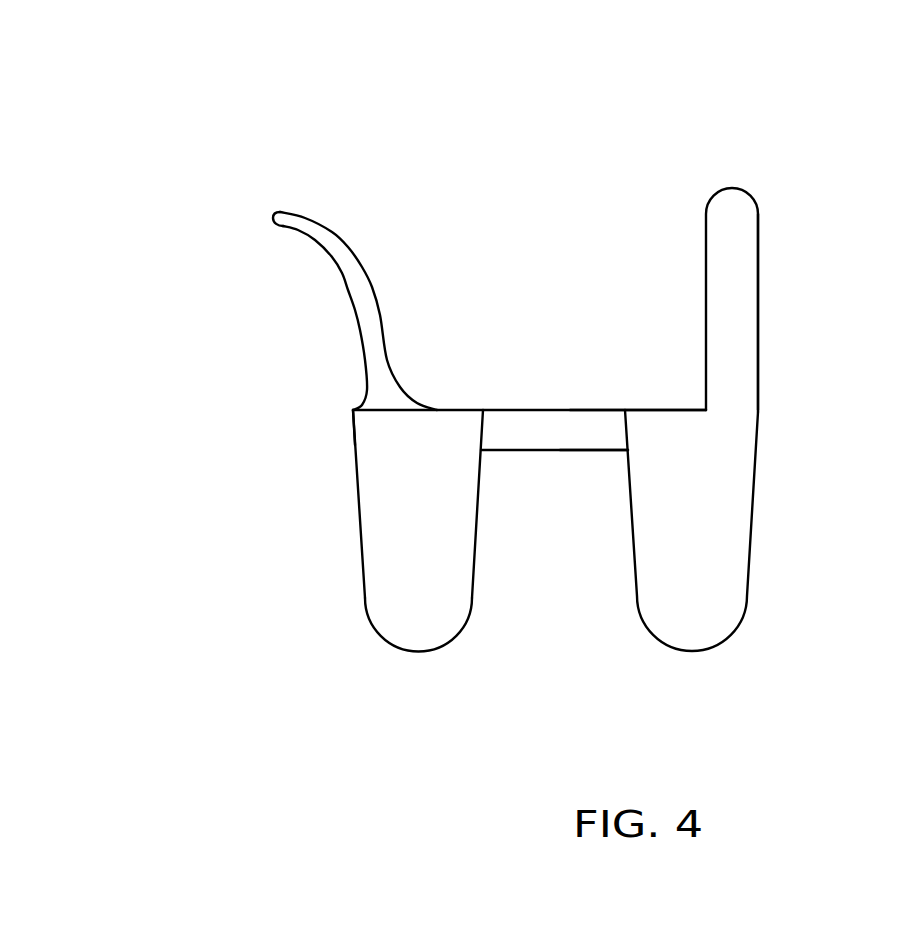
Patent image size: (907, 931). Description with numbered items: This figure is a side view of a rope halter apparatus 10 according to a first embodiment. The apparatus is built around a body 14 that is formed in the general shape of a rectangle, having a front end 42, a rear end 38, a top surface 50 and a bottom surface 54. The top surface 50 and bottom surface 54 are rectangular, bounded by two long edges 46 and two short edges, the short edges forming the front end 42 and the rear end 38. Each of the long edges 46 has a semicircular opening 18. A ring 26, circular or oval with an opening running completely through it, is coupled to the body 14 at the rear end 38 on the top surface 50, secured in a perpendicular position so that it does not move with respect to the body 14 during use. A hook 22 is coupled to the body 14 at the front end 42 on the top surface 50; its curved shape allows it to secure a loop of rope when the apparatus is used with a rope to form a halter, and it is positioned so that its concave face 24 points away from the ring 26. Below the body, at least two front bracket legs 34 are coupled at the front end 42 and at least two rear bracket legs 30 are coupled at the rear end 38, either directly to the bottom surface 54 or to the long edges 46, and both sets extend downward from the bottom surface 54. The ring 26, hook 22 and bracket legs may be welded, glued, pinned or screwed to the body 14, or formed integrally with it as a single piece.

The rope halter apparatus 10 is at (603, 140).
The body 14 is at (473, 410).
The semicircular opening 18 is at (523, 437).
The hook 22 is at (283, 223).
The concave face 24 is at (348, 288).
The ring 26 is at (733, 248).
The rear bracket legs 30 is at (737, 522).
The front bracket legs 34 is at (392, 610).
The rear end 38 is at (758, 414).
The front end 42 is at (350, 420).
The long edges 46 is at (372, 435).
The top surface 50 is at (615, 408).
The bottom surface 54 is at (590, 452).